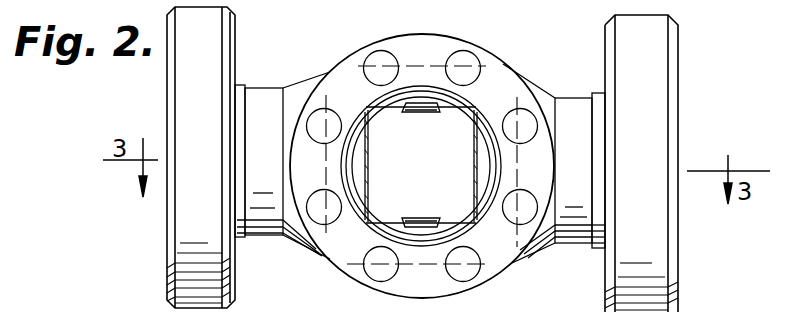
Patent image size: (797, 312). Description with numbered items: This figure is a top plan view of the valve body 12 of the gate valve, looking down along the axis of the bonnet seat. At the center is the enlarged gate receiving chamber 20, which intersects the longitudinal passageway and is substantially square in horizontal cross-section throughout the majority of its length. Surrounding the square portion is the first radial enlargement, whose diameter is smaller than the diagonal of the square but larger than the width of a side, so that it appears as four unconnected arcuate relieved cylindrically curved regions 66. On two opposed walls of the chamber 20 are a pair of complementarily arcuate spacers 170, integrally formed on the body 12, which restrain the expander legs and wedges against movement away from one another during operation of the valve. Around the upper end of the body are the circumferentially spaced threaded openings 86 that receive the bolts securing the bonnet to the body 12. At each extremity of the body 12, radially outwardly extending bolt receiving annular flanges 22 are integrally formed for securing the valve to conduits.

The body 12 is at (297, 242).
The gate receiving chamber 20 is at (475, 160).
The bolt receiving annular flanges 22 is at (180, 238).
The arcuate relieved cylindrically curved regions 66 is at (390, 111).
The threaded openings 86 is at (520, 124).
The arcuate spacers 170 is at (432, 112).